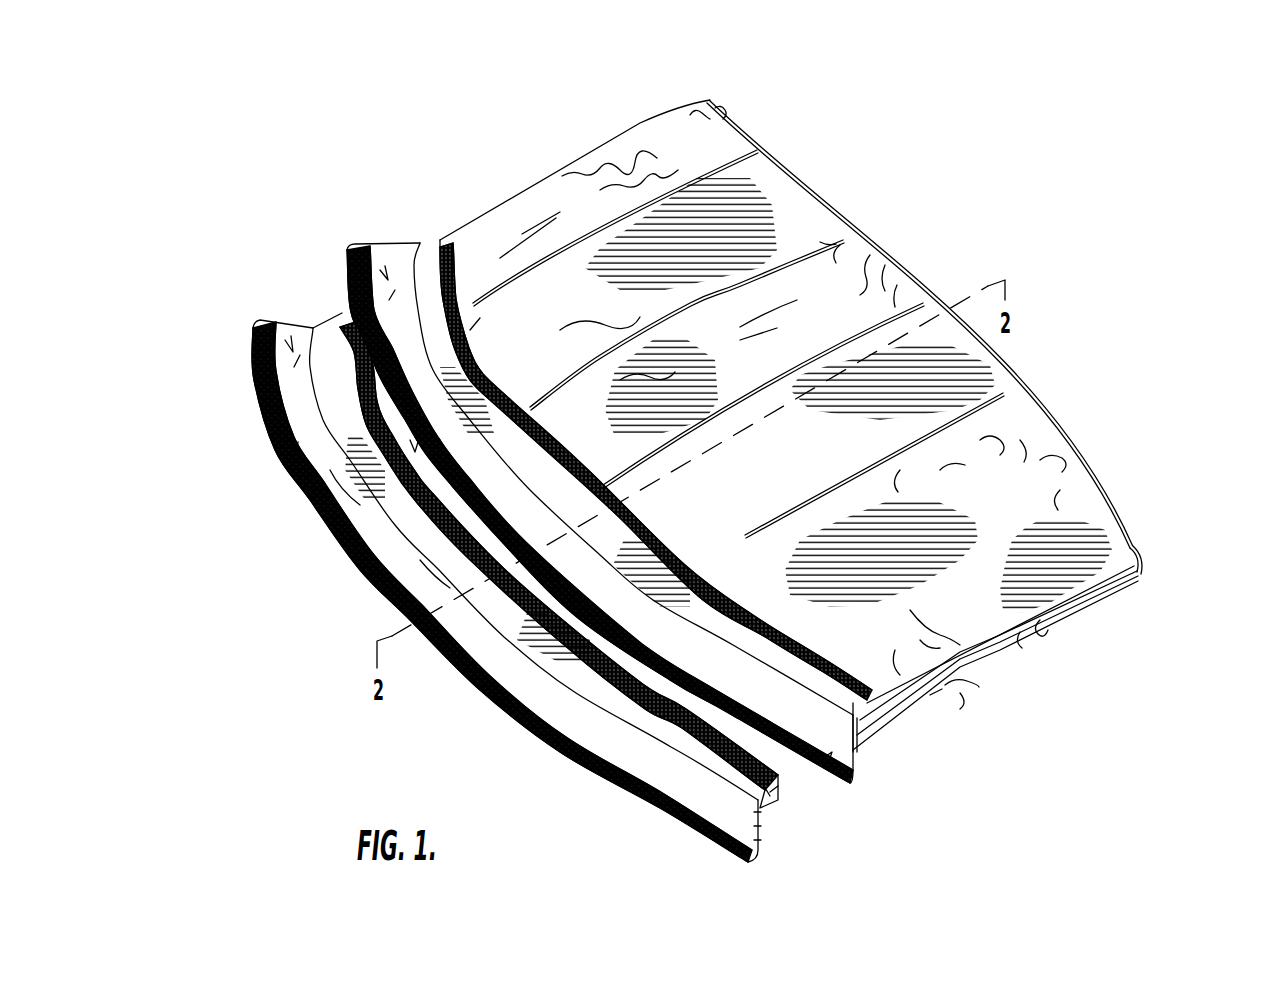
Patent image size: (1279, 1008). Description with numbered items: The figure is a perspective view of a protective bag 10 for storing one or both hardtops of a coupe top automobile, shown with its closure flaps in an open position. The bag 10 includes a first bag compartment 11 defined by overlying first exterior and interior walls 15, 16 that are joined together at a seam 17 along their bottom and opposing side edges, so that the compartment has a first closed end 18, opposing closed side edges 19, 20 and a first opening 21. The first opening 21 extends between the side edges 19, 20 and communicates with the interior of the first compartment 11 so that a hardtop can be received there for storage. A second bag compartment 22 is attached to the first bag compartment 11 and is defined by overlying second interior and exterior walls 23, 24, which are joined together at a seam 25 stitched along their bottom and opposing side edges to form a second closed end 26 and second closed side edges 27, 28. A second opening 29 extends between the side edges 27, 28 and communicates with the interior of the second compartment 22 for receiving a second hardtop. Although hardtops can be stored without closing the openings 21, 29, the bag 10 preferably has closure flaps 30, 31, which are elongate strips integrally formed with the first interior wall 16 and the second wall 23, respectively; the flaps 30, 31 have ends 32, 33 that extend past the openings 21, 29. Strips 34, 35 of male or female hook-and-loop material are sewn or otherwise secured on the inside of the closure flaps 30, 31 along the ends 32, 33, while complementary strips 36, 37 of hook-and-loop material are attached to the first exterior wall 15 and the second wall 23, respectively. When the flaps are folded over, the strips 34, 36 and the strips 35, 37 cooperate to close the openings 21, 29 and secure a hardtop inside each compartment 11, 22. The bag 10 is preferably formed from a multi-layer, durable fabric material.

The protective bag 10 is at (1071, 213).
The first bag compartment 11 is at (925, 490).
The first exterior wall 15 is at (1082, 472).
The first interior wall 16 is at (1103, 597).
The seam 17 is at (1123, 533).
The first closed end 18 is at (867, 242).
The closed side edge 19 is at (1060, 615).
The closed side edge 20 is at (641, 122).
The first opening 21 is at (500, 415).
The second bag compartment 22 is at (337, 312).
The second interior wall 23 is at (783, 785).
The second exterior wall 24 is at (773, 808).
The seam 25 is at (805, 778).
The second closed end 26 is at (1047, 637).
The second closed side edge 27 is at (965, 688).
The second closed side edge 28 is at (315, 323).
The second opening 29 is at (478, 676).
The closure flap 30 is at (400, 250).
The closure flap 31 is at (300, 325).
The end of closure flap 32 is at (577, 757).
The end of closure flap 33 is at (503, 710).
The hook-and-loop strip 34 is at (366, 250).
The hook-and-loop strip 35 is at (262, 330).
The hook-and-loop strip 36 is at (452, 262).
The hook-and-loop strip 37 is at (350, 412).